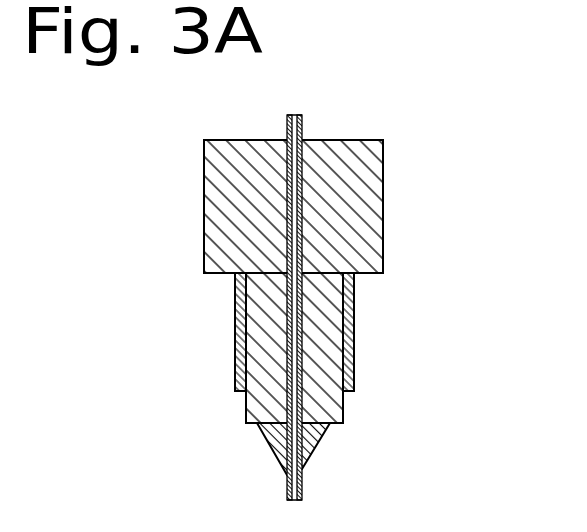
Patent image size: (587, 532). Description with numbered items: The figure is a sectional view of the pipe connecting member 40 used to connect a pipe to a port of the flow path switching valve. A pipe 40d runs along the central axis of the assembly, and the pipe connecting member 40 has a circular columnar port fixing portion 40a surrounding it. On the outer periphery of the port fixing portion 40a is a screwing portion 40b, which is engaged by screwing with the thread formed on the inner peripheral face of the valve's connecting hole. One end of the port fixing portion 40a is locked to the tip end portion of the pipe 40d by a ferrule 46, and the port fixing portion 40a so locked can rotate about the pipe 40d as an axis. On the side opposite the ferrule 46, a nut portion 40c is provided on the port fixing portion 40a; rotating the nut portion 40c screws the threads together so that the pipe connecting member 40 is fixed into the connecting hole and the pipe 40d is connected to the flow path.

The pipe connecting member 40 is at (365, 294).
The port fixing portion 40a is at (330, 325).
The screwing portion 40b is at (353, 367).
The nut portion 40c is at (375, 237).
The pipe 40d is at (302, 128).
The ferrule 46 is at (302, 437).